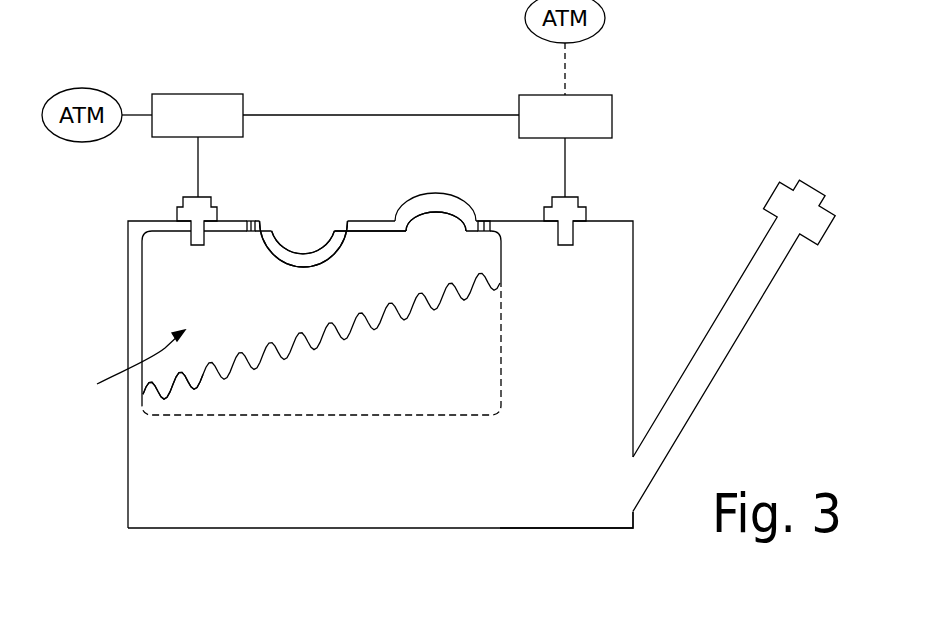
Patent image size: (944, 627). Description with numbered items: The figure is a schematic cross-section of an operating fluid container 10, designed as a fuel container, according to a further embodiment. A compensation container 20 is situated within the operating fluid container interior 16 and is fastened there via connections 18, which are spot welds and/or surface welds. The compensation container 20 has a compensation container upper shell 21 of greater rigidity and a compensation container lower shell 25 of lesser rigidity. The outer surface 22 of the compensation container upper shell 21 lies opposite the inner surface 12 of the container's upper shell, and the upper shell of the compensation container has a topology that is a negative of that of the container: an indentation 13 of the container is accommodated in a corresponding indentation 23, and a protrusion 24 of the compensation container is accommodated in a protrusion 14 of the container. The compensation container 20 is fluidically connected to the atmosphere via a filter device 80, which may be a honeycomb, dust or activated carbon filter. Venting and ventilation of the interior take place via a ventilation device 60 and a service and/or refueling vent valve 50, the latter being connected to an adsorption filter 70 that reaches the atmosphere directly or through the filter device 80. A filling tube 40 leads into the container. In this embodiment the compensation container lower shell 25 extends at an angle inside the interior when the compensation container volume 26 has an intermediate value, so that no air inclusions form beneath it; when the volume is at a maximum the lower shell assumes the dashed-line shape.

The operating fluid container 10 is at (128, 300).
The inner surface 12 is at (263, 222).
The indentation 13 is at (308, 238).
The protrusion 14 is at (437, 197).
The operating fluid container interior 16 is at (595, 516).
The connection 18 is at (249, 220).
The compensation container 20 is at (123, 371).
The compensation container upper shell 21 is at (142, 260).
The outer surface 22 is at (382, 232).
The indentation 23 is at (301, 262).
The protrusion 24 is at (437, 222).
The compensation container lower shell 25 is at (337, 342).
The compensation container volume 26 is at (186, 362).
The filling tube 40 is at (740, 317).
The service valve and/or refueling vent valve 50 is at (568, 222).
The ventilation device 60 is at (183, 203).
The adsorption filter 70 is at (598, 103).
The filter device 80 is at (227, 108).